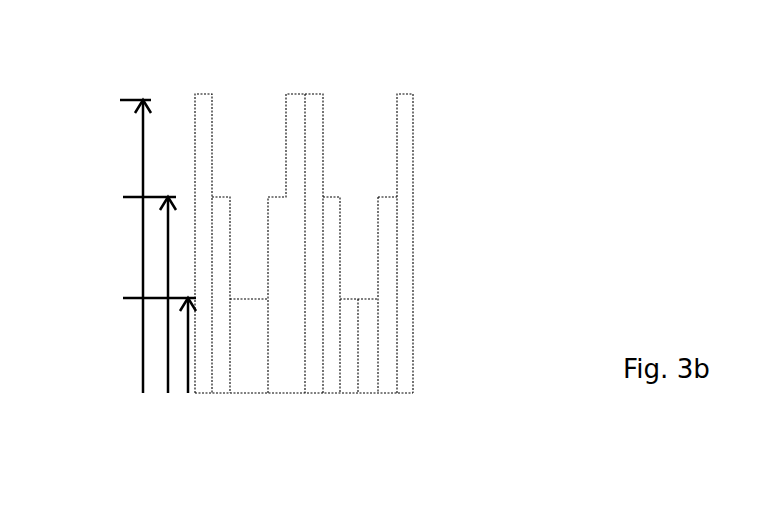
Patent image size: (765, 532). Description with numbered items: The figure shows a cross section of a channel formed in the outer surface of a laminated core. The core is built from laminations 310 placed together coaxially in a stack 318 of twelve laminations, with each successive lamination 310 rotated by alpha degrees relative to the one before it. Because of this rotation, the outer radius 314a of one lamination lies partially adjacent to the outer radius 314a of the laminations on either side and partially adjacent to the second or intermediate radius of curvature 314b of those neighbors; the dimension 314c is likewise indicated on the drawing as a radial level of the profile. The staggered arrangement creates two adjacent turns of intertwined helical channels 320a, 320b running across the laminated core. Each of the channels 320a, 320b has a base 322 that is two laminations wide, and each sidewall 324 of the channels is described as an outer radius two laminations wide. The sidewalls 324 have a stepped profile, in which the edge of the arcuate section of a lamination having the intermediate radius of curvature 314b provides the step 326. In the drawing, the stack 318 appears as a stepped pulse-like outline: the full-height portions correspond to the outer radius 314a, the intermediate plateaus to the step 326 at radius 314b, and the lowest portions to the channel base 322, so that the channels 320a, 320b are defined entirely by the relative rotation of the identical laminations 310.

The lamination 310 is at (205, 110).
The outer radius 314a is at (99, 239).
The second or intermediate radius of curvature 314b is at (111, 288).
The third amplitude level 314c is at (124, 340).
The stack 318 is at (346, 251).
The channel 320a is at (256, 259).
The channel 320b is at (477, 243).
The base 322 is at (256, 298).
The sidewall 324 is at (378, 255).
The step 326 is at (390, 198).